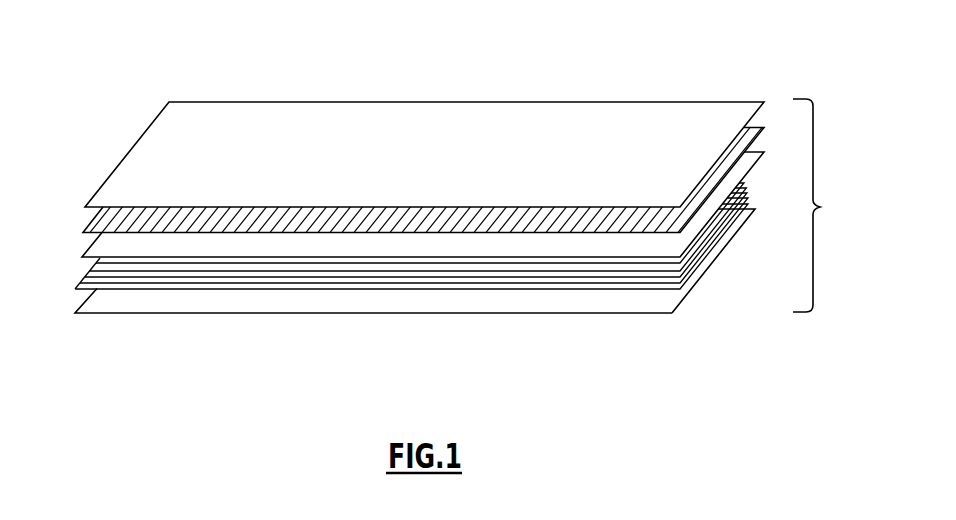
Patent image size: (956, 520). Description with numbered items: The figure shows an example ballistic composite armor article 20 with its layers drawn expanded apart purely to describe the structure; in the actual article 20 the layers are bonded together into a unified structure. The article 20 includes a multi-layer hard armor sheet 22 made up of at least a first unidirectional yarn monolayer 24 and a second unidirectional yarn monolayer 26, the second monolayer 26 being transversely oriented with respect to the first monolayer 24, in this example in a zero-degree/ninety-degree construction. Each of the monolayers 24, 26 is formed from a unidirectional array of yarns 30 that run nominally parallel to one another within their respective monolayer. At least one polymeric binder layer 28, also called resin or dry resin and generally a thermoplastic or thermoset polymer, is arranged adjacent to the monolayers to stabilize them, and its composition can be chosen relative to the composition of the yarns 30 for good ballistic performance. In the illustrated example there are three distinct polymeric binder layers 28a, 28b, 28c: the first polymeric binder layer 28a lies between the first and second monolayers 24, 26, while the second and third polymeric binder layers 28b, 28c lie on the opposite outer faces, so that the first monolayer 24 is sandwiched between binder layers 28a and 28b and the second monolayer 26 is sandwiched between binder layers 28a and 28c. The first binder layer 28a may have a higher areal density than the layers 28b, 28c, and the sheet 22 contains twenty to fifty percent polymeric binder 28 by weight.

The ballistic composite armor article 20 is at (203, 371).
The multi-layer hard armor sheet 22 is at (820, 205).
The first unidirectional yarn monolayer 24 is at (689, 221).
The second unidirectional yarn monolayer 26 is at (683, 291).
The polymeric binder layer 28 is at (548, 272).
The first polymeric binder layer 28a is at (103, 248).
The second polymeric binder layer 28b is at (163, 132).
The third polymeric binder layer 28c is at (110, 305).
The yarns 30 is at (370, 224).